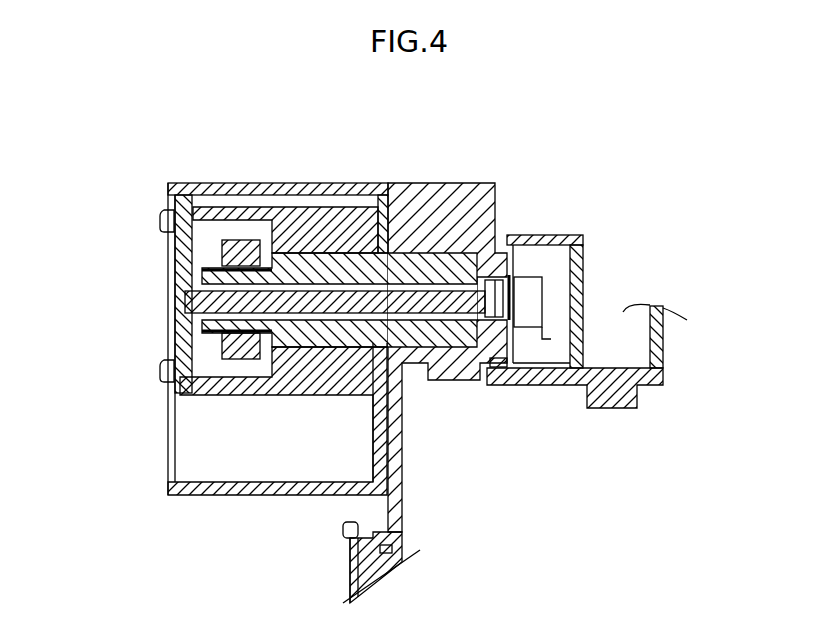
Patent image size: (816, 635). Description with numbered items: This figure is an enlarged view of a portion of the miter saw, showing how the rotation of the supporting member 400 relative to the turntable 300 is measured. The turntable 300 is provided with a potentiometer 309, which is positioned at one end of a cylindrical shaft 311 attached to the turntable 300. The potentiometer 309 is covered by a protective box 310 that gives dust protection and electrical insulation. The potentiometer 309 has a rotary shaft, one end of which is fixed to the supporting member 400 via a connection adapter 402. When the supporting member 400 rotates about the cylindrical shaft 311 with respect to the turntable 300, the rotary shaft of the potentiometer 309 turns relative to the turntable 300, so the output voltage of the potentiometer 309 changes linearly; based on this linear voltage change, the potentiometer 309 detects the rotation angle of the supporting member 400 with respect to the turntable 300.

The turntable 300 is at (635, 408).
The potentiometer 309 is at (543, 307).
The protective box 310 is at (582, 237).
The cylindrical shaft 311 is at (410, 240).
The supporting member 400 is at (277, 183).
The connection adapter 402 is at (180, 300).